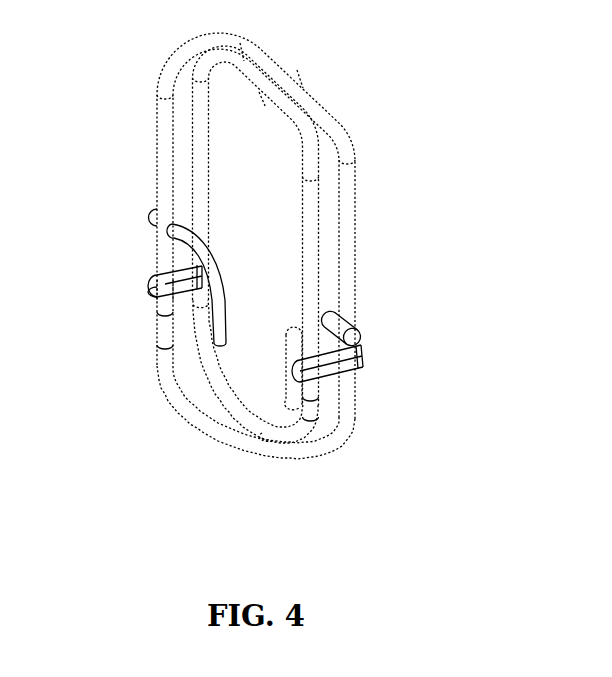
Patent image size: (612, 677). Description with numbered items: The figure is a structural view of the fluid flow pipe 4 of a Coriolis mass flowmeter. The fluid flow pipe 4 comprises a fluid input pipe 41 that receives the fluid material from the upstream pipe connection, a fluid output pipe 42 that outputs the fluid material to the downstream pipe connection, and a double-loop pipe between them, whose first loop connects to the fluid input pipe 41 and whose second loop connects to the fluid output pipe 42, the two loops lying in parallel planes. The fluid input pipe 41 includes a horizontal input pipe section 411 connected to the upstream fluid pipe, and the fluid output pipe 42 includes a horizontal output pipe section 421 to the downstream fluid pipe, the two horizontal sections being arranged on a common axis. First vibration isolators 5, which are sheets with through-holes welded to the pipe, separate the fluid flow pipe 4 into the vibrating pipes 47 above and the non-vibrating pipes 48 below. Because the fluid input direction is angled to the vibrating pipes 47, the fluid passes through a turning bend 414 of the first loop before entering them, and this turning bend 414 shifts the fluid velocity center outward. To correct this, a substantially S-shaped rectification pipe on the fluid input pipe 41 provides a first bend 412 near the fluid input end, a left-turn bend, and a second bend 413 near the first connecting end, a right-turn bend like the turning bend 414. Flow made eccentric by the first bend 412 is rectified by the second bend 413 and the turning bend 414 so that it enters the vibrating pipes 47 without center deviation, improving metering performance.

The fluid flow pipe 4 is at (368, 88).
The vibrating pipes 47 is at (165, 180).
The fluid output pipe 42 is at (147, 213).
The horizontal output pipe section 421 is at (187, 230).
The first vibration isolators 5 is at (153, 280).
The non-vibrating pipes 48 is at (165, 328).
The turning bend 414 is at (204, 345).
The first bend 412 is at (297, 327).
The horizontal input pipe section 411 is at (341, 312).
The fluid input pipe 41 is at (372, 329).
The second bend 413 is at (280, 410).